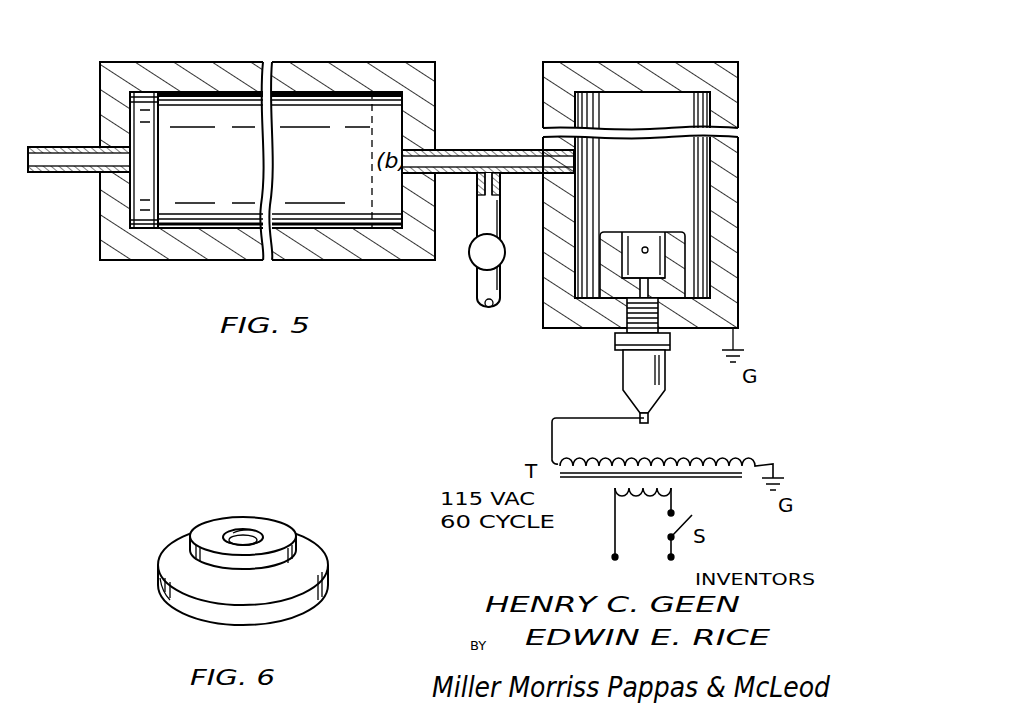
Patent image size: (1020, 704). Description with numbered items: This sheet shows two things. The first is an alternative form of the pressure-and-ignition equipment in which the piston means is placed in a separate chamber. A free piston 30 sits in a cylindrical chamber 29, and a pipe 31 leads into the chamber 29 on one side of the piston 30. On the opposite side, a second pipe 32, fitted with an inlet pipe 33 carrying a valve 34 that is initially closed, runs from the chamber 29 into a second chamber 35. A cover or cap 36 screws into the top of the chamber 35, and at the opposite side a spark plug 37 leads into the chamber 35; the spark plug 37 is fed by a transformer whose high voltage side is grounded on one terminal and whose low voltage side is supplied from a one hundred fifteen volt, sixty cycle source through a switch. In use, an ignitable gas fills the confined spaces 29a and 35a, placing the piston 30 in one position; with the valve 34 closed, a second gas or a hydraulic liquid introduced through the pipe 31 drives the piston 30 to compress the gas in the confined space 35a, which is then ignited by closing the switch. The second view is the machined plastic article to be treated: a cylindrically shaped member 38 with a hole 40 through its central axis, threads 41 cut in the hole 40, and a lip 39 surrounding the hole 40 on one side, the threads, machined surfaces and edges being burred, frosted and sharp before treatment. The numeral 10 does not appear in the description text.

In FIG. 5, the sensing device 10 is at (685, 278).
In FIG. 5, the cylindrical chamber 29 is at (205, 63).
In FIG. 5, the confined space 29a is at (238, 118).
In FIG. 5, the free piston 30 is at (145, 214).
In FIG. 5, the pipe 31 is at (68, 172).
In FIG. 5, the second pipe 32 is at (462, 150).
In FIG. 5, the inlet pipe 33 is at (500, 291).
In FIG. 5, the valve 34 is at (473, 262).
In FIG. 5, the chamber 35 is at (738, 230).
In FIG. 5, the confined space 35a is at (668, 172).
In FIG. 5, the cover or cap 36 is at (670, 64).
In FIG. 5, the spark plug 37 is at (615, 350).
In FIG. 6, the cylindrically shaped member 38 is at (310, 556).
In FIG. 6, the lip 39 is at (207, 535).
In FIG. 6, the hole 40 is at (243, 546).
In FIG. 6, the threads 41 is at (258, 535).